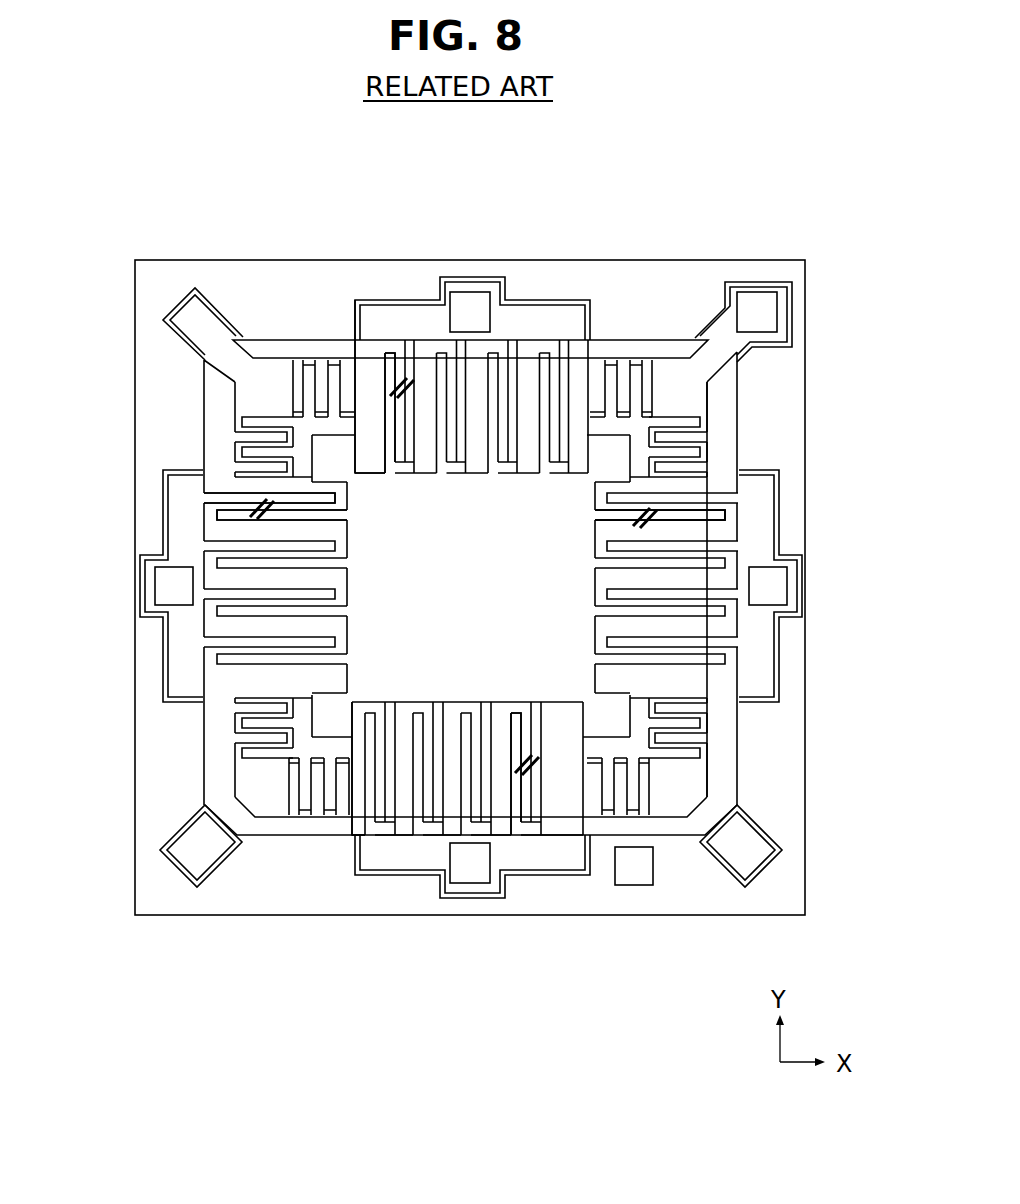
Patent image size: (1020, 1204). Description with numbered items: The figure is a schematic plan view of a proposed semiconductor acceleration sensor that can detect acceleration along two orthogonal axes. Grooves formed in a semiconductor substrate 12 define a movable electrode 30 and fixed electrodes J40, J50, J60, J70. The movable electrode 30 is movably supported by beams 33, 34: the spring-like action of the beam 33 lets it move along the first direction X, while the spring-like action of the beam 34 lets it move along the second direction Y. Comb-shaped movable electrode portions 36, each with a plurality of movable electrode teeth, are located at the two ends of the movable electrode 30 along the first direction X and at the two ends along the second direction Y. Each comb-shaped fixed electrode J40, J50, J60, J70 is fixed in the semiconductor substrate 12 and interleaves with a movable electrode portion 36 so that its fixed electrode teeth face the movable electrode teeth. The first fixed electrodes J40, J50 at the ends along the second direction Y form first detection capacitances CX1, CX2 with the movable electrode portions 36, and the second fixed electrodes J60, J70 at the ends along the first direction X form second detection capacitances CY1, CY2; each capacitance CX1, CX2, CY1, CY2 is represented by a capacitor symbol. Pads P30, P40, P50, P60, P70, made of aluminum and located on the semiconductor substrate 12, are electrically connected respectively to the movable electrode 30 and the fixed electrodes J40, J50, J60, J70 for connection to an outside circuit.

The semiconductor substrate 12 is at (249, 257).
The movable electrode 30 is at (545, 640).
The beam 33 is at (320, 360).
The beam 34 is at (233, 442).
The movable electrode portion 36 is at (380, 430).
The pad P30 is at (755, 307).
The pad P40 is at (460, 880).
The pad P50 is at (478, 306).
The pad P60 is at (775, 588).
The pad P70 is at (170, 587).
The first fixed electrode J40 is at (513, 795).
The first fixed electrode J50 is at (412, 370).
The second fixed electrode J60 is at (688, 537).
The second fixed electrode J70 is at (235, 490).
The first detection capacitance CX1 is at (525, 772).
The first detection capacitance CX2 is at (398, 368).
The second detection capacitance CY1 is at (657, 519).
The second detection capacitance CY2 is at (260, 503).